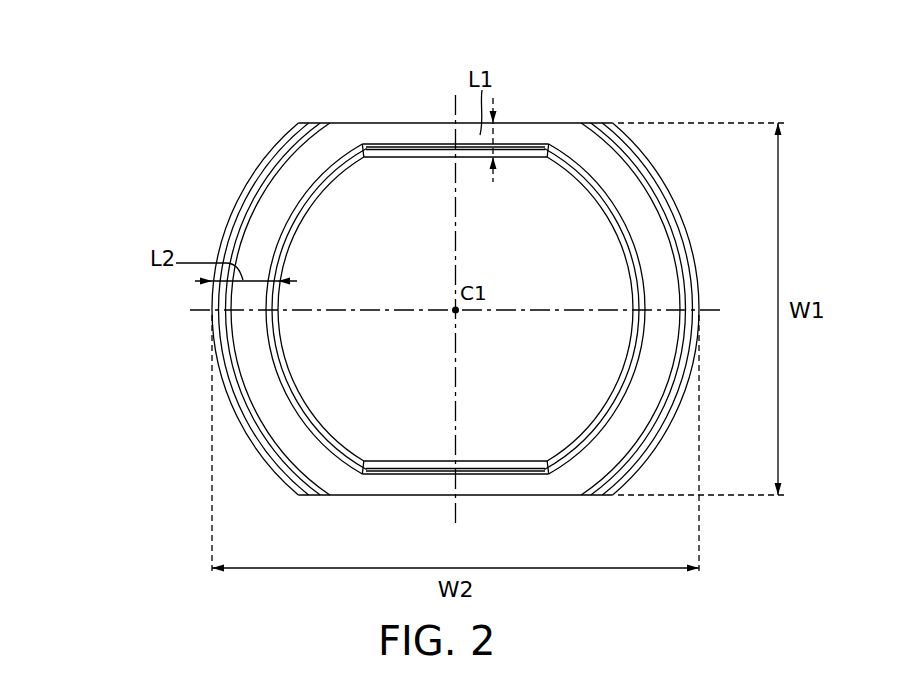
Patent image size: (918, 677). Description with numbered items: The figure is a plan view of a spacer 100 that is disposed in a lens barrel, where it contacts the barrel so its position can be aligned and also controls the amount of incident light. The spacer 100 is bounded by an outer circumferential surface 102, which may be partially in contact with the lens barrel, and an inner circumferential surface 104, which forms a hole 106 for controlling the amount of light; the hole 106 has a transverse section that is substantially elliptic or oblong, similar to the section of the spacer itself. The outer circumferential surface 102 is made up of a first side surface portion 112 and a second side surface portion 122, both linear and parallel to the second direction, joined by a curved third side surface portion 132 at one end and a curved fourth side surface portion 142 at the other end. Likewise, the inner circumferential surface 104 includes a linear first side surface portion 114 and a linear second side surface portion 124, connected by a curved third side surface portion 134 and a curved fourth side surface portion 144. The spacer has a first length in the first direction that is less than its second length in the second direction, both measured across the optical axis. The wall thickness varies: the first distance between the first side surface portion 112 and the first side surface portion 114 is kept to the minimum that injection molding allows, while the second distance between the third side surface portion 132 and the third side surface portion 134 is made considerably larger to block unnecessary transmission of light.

The spacer 100 is at (604, 102).
The outer circumferential surface 102 is at (112, 73).
The inner circumferential surface 104 is at (112, 385).
The hole 106 is at (563, 254).
The first side surface portion 112 is at (542, 122).
The first side surface portion 114 is at (408, 159).
The second side surface portion 122 is at (540, 496).
The second side surface portion 124 is at (407, 460).
The third side surface portion 132 is at (243, 190).
The third side surface portion 134 is at (300, 224).
The fourth side surface portion 142 is at (692, 247).
The fourth side surface portion 144 is at (610, 397).